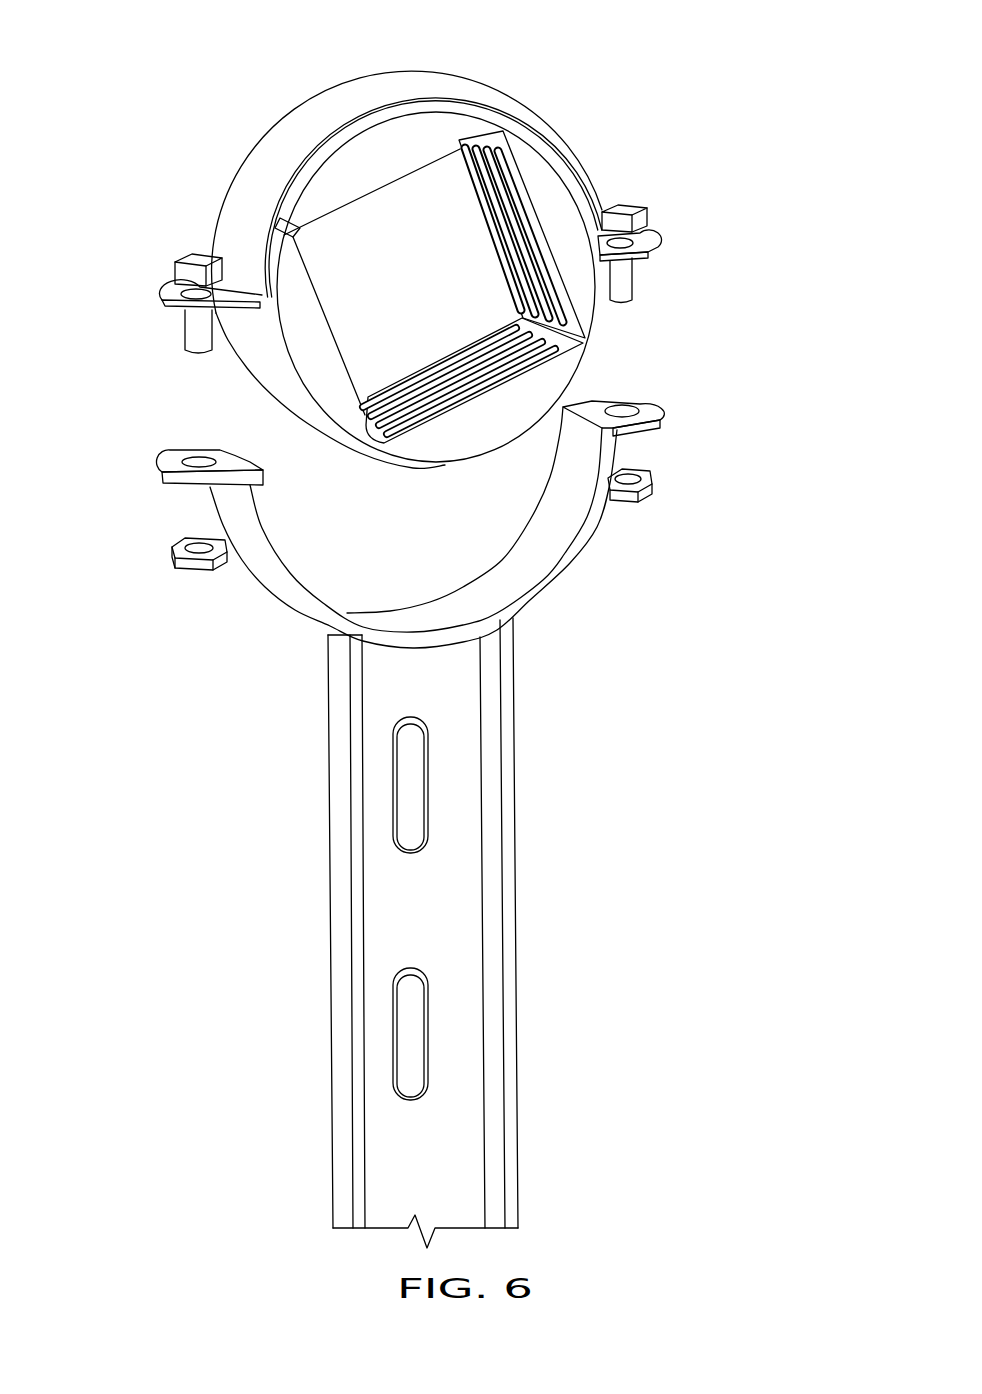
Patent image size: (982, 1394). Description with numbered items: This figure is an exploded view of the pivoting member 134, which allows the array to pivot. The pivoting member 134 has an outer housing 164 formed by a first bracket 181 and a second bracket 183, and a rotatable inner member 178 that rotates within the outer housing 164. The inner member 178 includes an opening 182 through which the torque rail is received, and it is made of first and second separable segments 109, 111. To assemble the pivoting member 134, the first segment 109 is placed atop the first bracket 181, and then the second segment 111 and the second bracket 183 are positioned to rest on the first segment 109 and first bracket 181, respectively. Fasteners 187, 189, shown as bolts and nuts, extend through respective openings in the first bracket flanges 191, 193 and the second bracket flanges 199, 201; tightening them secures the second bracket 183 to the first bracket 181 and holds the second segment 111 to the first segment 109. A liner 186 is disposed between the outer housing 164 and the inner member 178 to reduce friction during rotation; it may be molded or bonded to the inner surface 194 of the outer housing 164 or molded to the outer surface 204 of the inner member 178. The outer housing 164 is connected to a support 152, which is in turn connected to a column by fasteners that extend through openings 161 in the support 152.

The first segment 109 is at (328, 397).
The second segment 111 is at (533, 160).
The pivoting member 134 is at (693, 903).
The support 152 is at (465, 900).
The openings 161 is at (400, 813).
The outer housing 164 is at (460, 82).
The inner member 178 is at (552, 208).
The first bracket 181 is at (260, 587).
The opening 182 is at (400, 296).
The second bracket 183 is at (247, 207).
The liner 186 is at (523, 588).
The fastener 187 is at (183, 326).
The fastener 189 is at (637, 203).
The first bracket flange 191 is at (162, 467).
The first bracket flange 193 is at (178, 284).
The inner surface 194 is at (543, 537).
The second bracket flange 199 is at (650, 403).
The second bracket flange 201 is at (655, 240).
The outer surface 204 is at (243, 355).